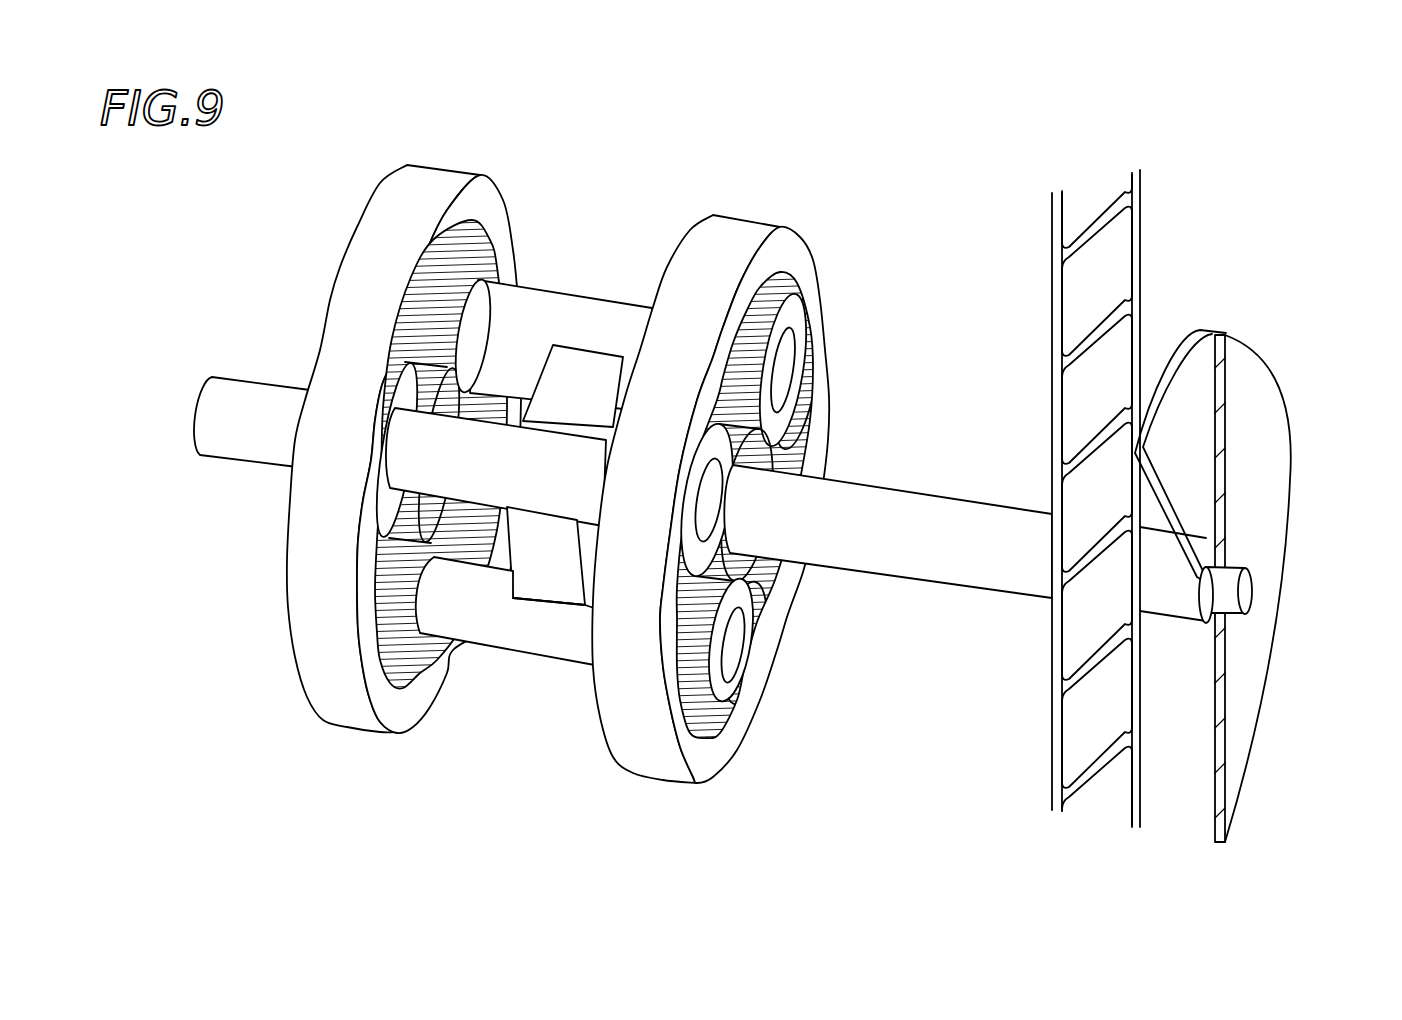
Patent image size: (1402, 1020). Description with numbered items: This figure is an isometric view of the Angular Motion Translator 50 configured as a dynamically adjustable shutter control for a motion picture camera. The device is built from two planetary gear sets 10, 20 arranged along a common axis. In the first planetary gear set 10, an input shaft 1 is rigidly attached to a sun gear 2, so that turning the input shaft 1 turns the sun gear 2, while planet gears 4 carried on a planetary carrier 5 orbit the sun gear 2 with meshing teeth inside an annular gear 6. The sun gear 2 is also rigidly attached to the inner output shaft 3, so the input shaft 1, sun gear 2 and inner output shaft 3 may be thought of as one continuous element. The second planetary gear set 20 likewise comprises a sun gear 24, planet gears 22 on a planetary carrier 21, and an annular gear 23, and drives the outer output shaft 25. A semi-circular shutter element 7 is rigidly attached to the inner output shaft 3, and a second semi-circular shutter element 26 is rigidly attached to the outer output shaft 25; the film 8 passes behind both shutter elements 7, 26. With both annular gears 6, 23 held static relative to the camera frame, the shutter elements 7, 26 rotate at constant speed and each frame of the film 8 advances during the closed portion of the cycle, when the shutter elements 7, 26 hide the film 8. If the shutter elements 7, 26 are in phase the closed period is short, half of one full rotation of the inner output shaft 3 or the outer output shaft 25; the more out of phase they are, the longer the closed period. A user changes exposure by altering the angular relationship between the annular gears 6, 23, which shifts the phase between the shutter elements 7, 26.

The input shaft 1 is at (263, 397).
The sun gear 2 is at (433, 558).
The inner output shaft 3 is at (1220, 590).
The planet gears 4 is at (422, 650).
The planetary carrier 5 is at (515, 307).
The annular gear 6 is at (400, 194).
The shutter element 7 is at (1260, 372).
The film 8 is at (1081, 640).
The first planetary gear set 10 is at (340, 817).
The second planetary gear set 20 is at (670, 876).
The planetary carrier 21 is at (573, 643).
The planet gears 22 is at (790, 303).
The annular gear 23 is at (747, 232).
The sun gear 24 is at (733, 565).
The outer output shaft 25 is at (898, 513).
The shutter element 26 is at (1205, 328).
The Angular Motion Translator 50 is at (275, 196).